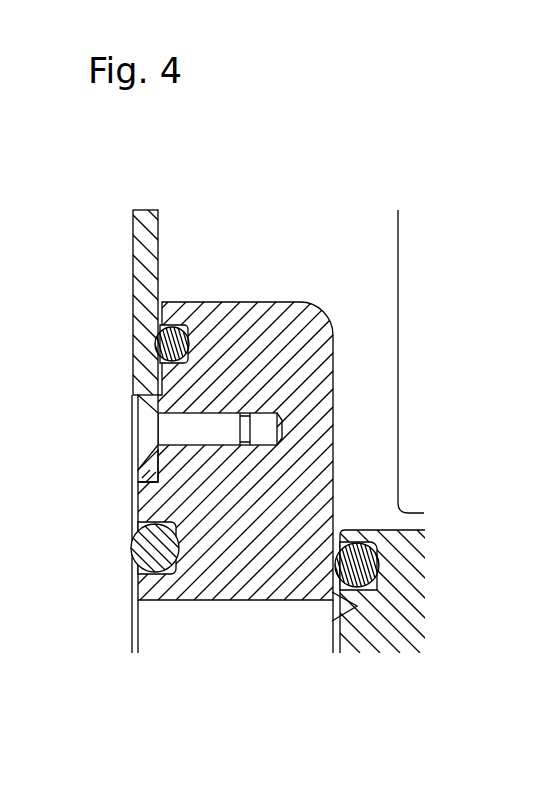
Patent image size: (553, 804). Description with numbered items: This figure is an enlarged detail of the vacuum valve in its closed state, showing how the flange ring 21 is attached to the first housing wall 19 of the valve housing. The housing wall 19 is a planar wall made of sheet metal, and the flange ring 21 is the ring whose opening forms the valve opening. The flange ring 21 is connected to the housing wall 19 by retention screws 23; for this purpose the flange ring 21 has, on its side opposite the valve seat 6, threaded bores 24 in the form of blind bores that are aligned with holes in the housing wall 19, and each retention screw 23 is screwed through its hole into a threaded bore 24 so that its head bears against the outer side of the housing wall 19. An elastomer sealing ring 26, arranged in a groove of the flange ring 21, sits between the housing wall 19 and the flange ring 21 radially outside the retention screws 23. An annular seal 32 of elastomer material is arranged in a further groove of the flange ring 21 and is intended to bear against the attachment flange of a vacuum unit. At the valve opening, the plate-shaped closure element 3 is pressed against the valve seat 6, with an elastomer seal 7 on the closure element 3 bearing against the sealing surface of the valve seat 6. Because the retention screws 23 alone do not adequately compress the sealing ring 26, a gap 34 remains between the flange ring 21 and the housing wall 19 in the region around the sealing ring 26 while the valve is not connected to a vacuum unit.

The closure element 3 is at (398, 632).
The valve seat 6 is at (356, 604).
The elastomer seal 7 is at (358, 562).
The first housing wall 19 is at (145, 293).
The flange ring 21 is at (302, 500).
The retention screw 23 is at (178, 428).
The threaded bore 24 is at (245, 428).
The elastomer sealing ring 26 is at (190, 332).
The annular seal 32 is at (150, 548).
The gap 34 is at (158, 472).